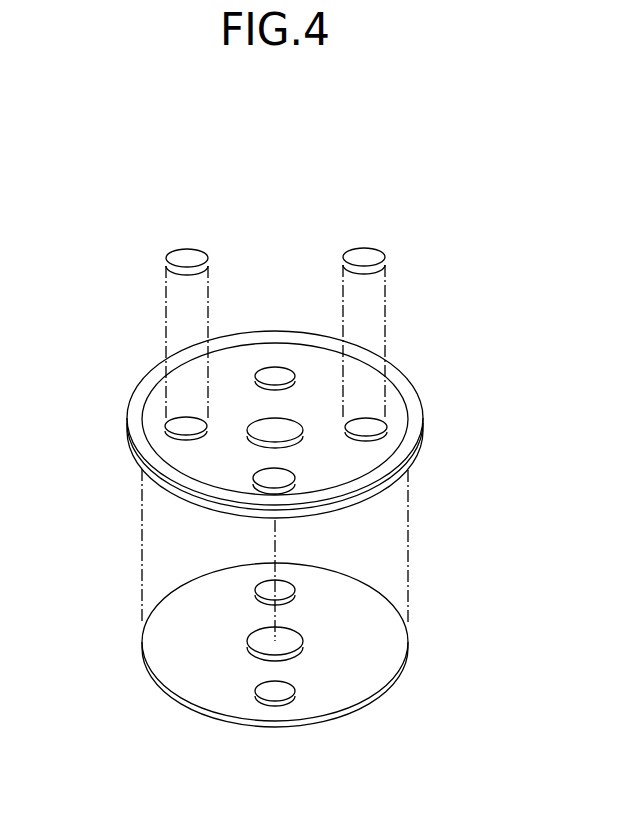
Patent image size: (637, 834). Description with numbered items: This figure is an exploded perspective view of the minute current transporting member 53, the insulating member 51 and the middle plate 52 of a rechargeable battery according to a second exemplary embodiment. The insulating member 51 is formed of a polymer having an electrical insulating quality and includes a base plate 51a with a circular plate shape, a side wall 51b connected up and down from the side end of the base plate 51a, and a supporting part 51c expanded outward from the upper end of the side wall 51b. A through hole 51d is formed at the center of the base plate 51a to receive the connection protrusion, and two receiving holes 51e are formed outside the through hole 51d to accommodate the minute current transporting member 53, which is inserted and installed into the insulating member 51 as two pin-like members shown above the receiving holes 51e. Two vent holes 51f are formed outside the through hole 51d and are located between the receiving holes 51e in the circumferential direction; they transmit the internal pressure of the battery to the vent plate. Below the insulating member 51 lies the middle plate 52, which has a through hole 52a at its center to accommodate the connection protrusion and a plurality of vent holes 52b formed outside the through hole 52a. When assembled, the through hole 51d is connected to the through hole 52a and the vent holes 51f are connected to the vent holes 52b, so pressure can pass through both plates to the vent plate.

The insulating member 51 is at (406, 358).
The base plate 51a is at (352, 455).
The side wall 51b is at (337, 505).
The supporting part 51c is at (155, 372).
The through hole 51d is at (262, 412).
The receiving hole 51e is at (182, 420).
The vent hole 51f is at (283, 365).
The middle plate 52 is at (373, 615).
The through hole 52a is at (300, 635).
The vent hole 52b is at (267, 583).
The minute current transporting member 53 is at (182, 252).